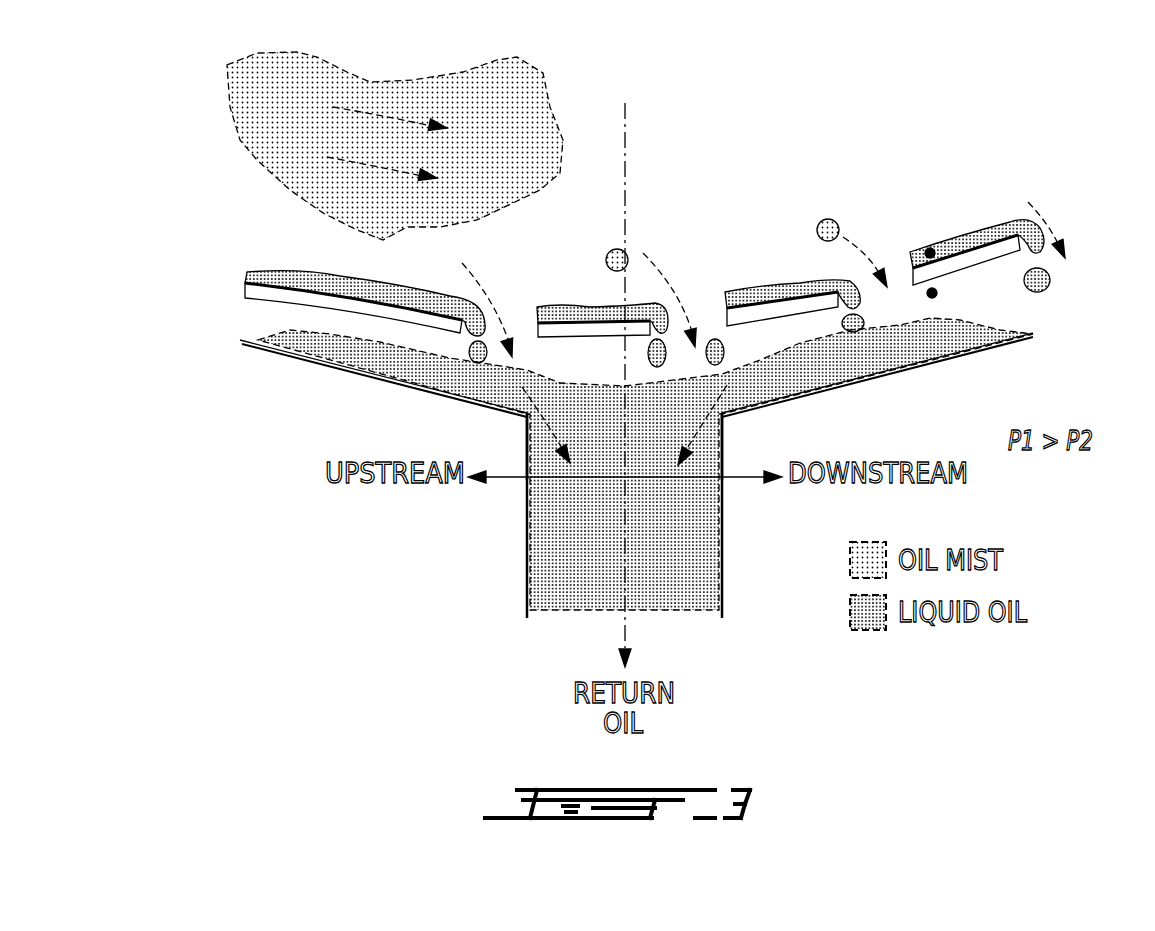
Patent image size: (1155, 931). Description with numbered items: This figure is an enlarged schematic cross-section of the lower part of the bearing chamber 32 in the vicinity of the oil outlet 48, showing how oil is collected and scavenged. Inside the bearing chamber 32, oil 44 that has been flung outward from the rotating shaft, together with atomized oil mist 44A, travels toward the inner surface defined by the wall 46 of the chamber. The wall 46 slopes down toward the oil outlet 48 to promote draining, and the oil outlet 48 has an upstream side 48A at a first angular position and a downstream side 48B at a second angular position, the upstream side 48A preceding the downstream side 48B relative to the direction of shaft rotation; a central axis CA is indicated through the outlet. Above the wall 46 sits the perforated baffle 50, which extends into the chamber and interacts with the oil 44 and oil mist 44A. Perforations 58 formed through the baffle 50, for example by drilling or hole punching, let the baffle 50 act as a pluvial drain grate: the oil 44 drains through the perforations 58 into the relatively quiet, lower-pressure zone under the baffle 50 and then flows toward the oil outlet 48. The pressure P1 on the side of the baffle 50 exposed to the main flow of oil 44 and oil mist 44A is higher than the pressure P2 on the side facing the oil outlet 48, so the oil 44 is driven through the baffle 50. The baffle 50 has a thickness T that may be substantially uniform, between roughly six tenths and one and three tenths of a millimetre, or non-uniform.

The bearing chamber 32 is at (856, 127).
The oil mist 44A is at (280, 93).
The oil 44 is at (283, 278).
The wall 46 is at (258, 342).
The oil outlet 48 is at (643, 433).
The upstream side 48A is at (527, 418).
The downstream side 48B is at (722, 416).
The perforated baffle 50 is at (255, 288).
The perforations 58 is at (525, 330).
The thickness T is at (810, 345).
The pressure P1 is at (930, 248).
The pressure P2 is at (932, 298).
The central axis CA is at (627, 127).